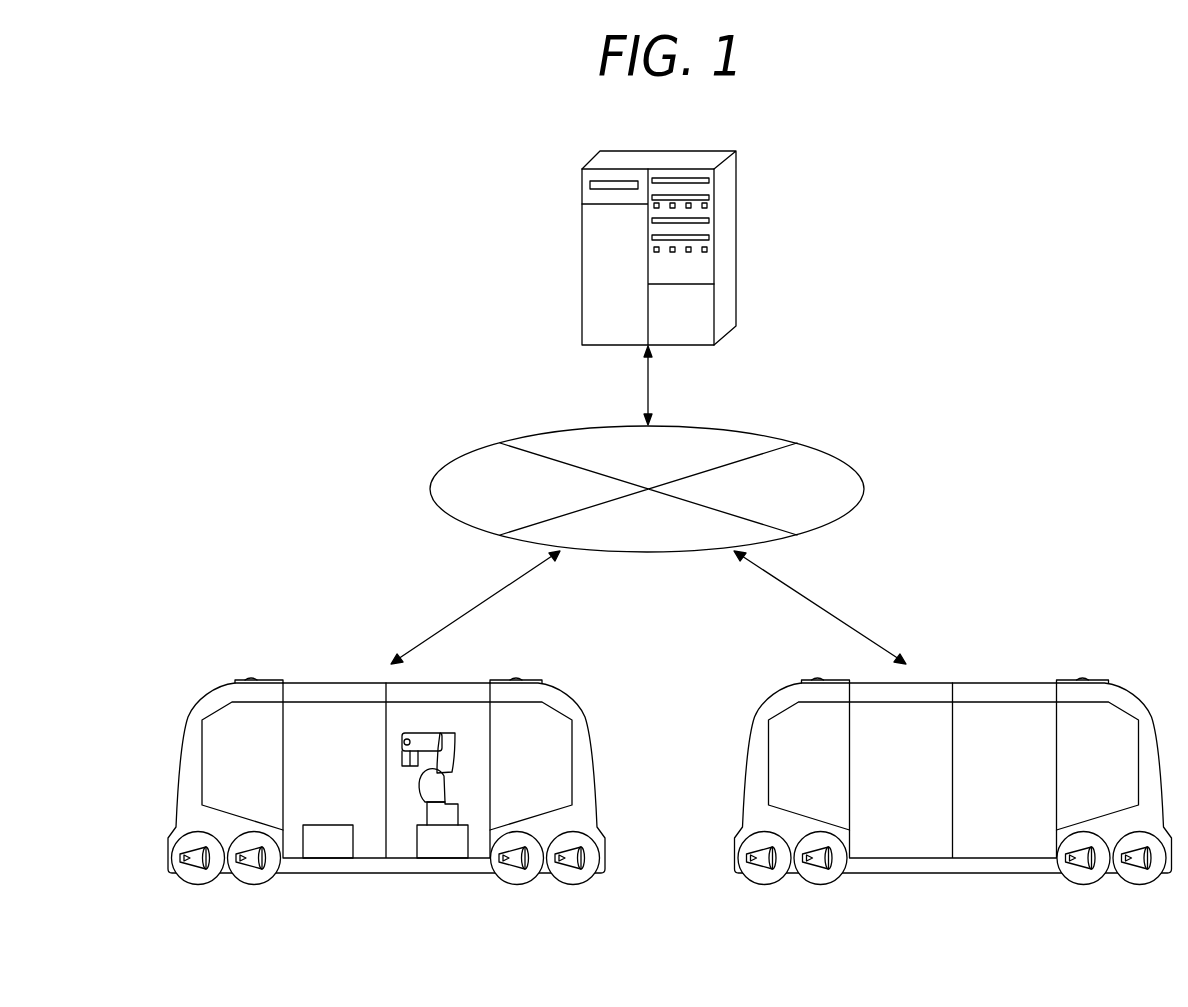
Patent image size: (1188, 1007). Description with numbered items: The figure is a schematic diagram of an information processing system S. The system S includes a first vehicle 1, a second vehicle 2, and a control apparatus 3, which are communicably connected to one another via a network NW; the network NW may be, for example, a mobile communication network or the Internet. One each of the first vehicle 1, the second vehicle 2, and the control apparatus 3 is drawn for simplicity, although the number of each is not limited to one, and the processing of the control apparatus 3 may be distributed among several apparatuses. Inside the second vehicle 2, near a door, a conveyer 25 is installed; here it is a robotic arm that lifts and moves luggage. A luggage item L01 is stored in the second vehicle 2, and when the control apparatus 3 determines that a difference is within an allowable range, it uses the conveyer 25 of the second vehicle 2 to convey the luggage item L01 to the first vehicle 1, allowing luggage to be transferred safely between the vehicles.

The first vehicle 1 is at (980, 875).
The second vehicle 2 is at (369, 873).
The control apparatus 3 is at (736, 232).
The conveyer 25 is at (430, 729).
The luggage item L01 is at (332, 850).
The network NW is at (826, 454).
The information processing system S is at (877, 366).